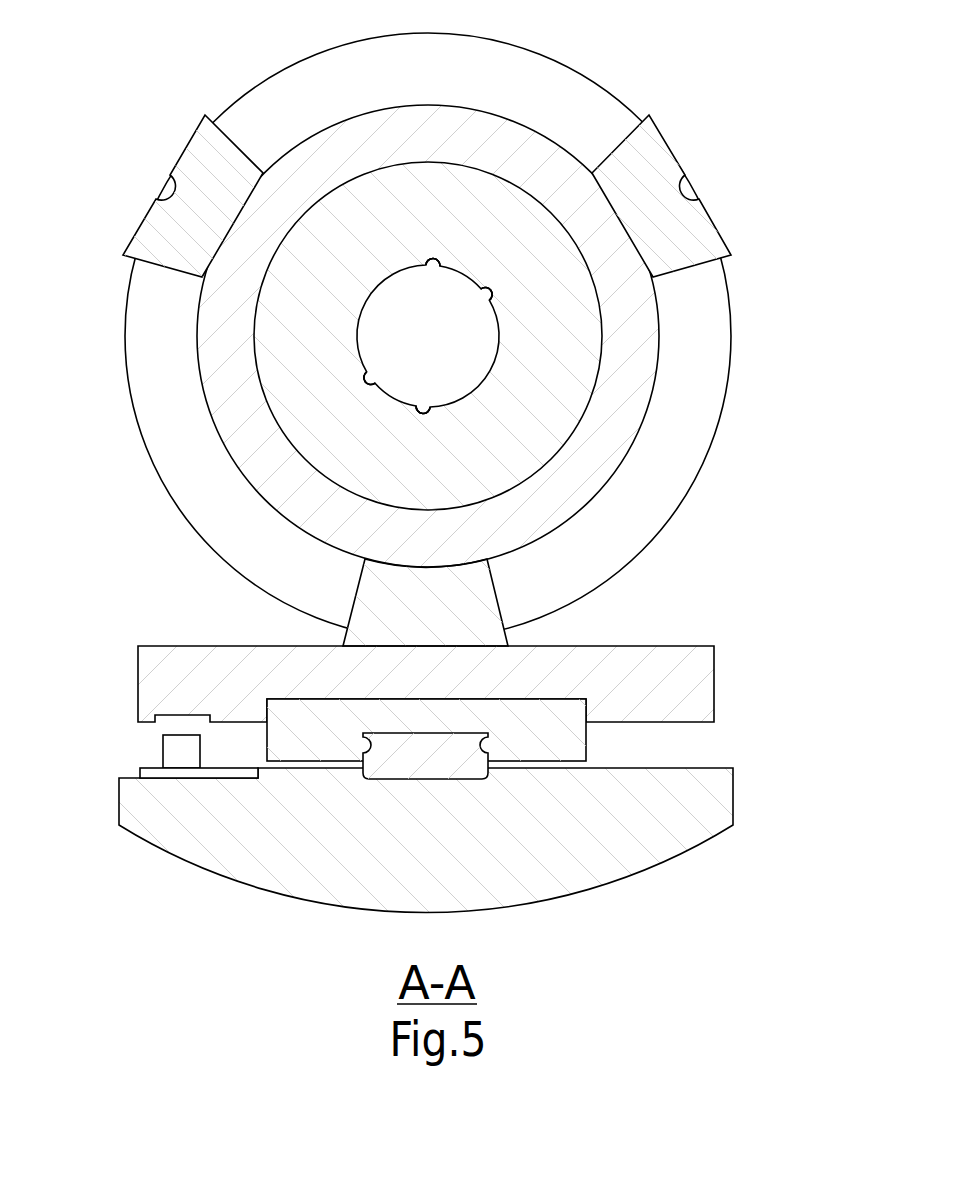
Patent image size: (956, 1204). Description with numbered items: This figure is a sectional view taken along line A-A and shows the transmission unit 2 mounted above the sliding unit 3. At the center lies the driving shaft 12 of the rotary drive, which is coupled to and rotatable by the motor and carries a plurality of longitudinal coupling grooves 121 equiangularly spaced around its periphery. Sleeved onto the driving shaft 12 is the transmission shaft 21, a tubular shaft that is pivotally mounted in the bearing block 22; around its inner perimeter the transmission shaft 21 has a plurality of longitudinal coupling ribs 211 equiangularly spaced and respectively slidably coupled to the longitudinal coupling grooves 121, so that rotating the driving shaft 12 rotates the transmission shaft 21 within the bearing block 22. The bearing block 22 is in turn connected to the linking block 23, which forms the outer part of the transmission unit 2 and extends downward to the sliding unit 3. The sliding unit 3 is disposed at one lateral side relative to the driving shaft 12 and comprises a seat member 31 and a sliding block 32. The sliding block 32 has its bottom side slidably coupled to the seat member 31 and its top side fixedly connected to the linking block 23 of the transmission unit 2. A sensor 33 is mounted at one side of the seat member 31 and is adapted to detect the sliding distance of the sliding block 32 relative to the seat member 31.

The transmission unit 2 is at (655, 95).
The transmission shaft 21 is at (472, 178).
The bearing block 22 is at (657, 338).
The linking block 23 is at (210, 546).
The driving shaft 12 is at (477, 363).
The longitudinal coupling ribs 211 is at (263, 388).
The longitudinal coupling grooves 121 is at (370, 377).
The sliding unit 3 is at (733, 712).
The seat member 31 is at (473, 768).
The sliding block 32 is at (562, 735).
The sensor 33 is at (153, 772).